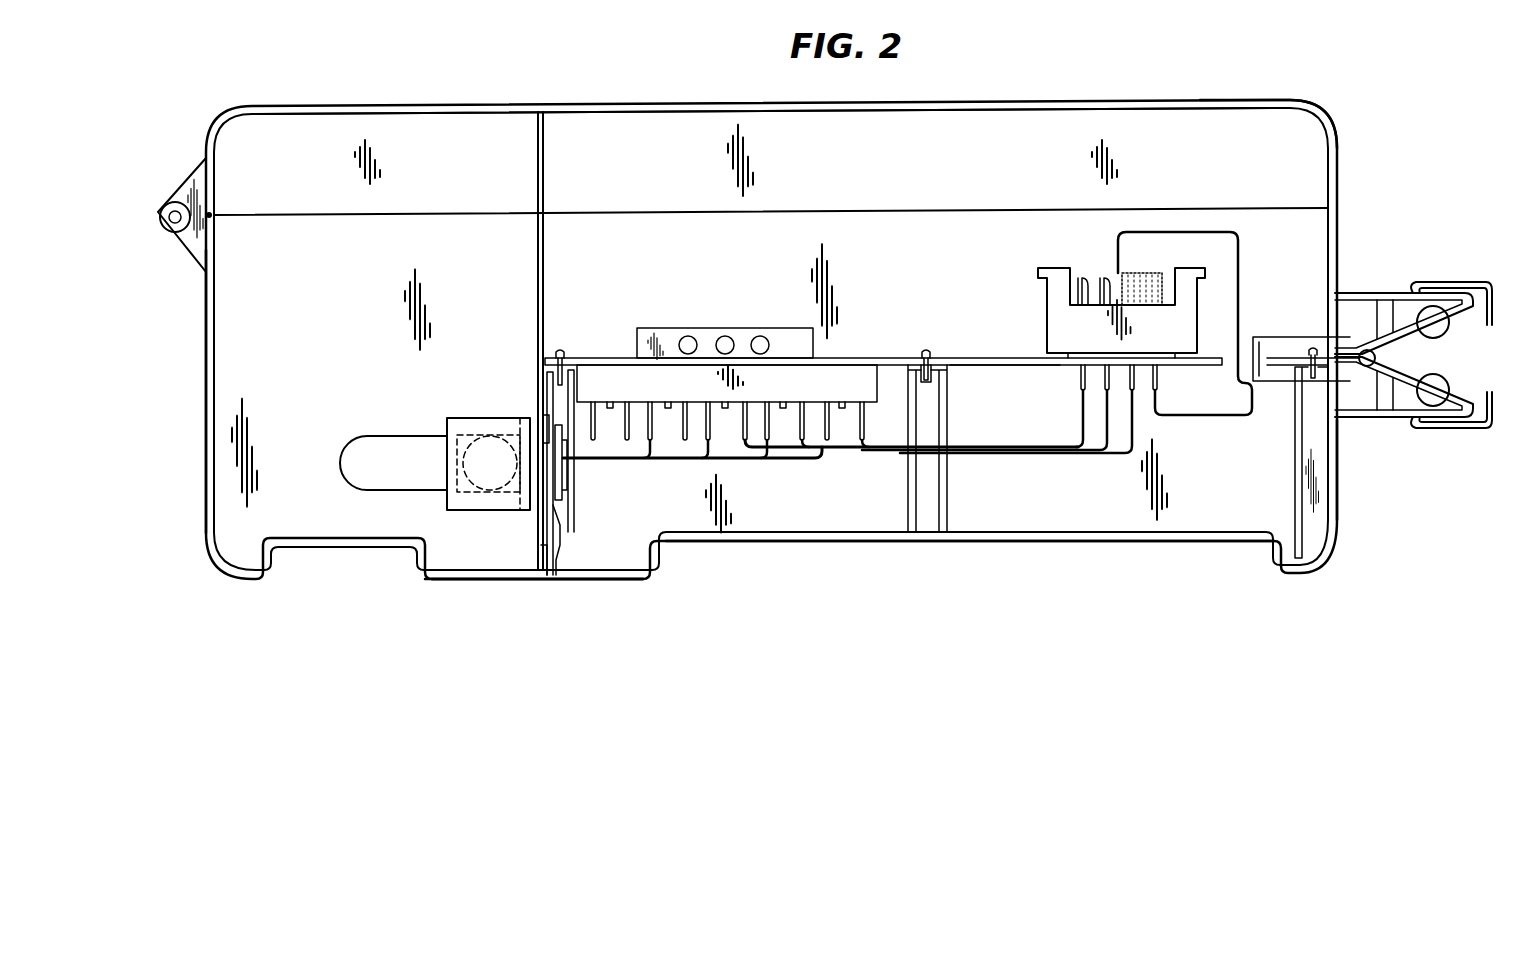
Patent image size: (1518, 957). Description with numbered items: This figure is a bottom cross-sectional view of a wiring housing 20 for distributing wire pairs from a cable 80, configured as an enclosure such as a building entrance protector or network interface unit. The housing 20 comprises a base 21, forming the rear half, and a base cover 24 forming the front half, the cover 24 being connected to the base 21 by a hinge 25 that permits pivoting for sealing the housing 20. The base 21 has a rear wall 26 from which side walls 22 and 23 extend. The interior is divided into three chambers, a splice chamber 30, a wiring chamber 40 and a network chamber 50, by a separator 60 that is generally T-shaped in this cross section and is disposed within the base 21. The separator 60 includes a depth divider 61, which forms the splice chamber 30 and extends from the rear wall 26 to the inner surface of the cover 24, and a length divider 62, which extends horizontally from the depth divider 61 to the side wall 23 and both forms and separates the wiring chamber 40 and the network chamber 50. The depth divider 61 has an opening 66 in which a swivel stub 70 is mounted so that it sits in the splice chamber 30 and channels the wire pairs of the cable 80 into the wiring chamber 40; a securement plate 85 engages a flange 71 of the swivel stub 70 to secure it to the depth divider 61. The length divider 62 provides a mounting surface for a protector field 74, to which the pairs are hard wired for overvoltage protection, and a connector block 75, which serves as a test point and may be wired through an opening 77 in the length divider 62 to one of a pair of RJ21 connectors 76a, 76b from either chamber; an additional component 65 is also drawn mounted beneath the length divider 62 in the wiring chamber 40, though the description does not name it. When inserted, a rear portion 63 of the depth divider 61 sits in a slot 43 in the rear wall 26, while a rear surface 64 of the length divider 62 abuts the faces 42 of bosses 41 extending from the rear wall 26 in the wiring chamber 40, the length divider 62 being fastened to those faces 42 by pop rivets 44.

The wiring housing 20 is at (904, 97).
The base 21 is at (739, 566).
The side wall 22 is at (207, 420).
The side wall 23 is at (1337, 468).
The base cover 24 is at (1318, 120).
The hinge 25 is at (172, 205).
The rear wall 26 is at (442, 580).
The splice chamber 30 is at (214, 324).
The wiring chamber 40 is at (1022, 540).
The bosses 41 is at (574, 510).
The face 42 is at (912, 364).
The slot 43 is at (544, 568).
The pop rivets 44 is at (562, 352).
The network chamber 50 is at (708, 130).
The separator 60 is at (538, 156).
The depth divider 61 is at (538, 192).
The length divider 62 is at (1000, 357).
The rear portion 63 is at (545, 538).
The rear surface 64 is at (1016, 366).
The electronic module 65 is at (598, 362).
The opening 66 is at (541, 425).
The swivel stub 70 is at (466, 440).
The flange 71 is at (565, 496).
The protector field 74 is at (737, 329).
The connector block 75 is at (1047, 269).
The RJ21 connector 76a is at (1398, 293).
The RJ21 connector 76b is at (1436, 419).
The opening 77 is at (1244, 332).
The cable 80 is at (365, 436).
The securement plate 85 is at (562, 545).